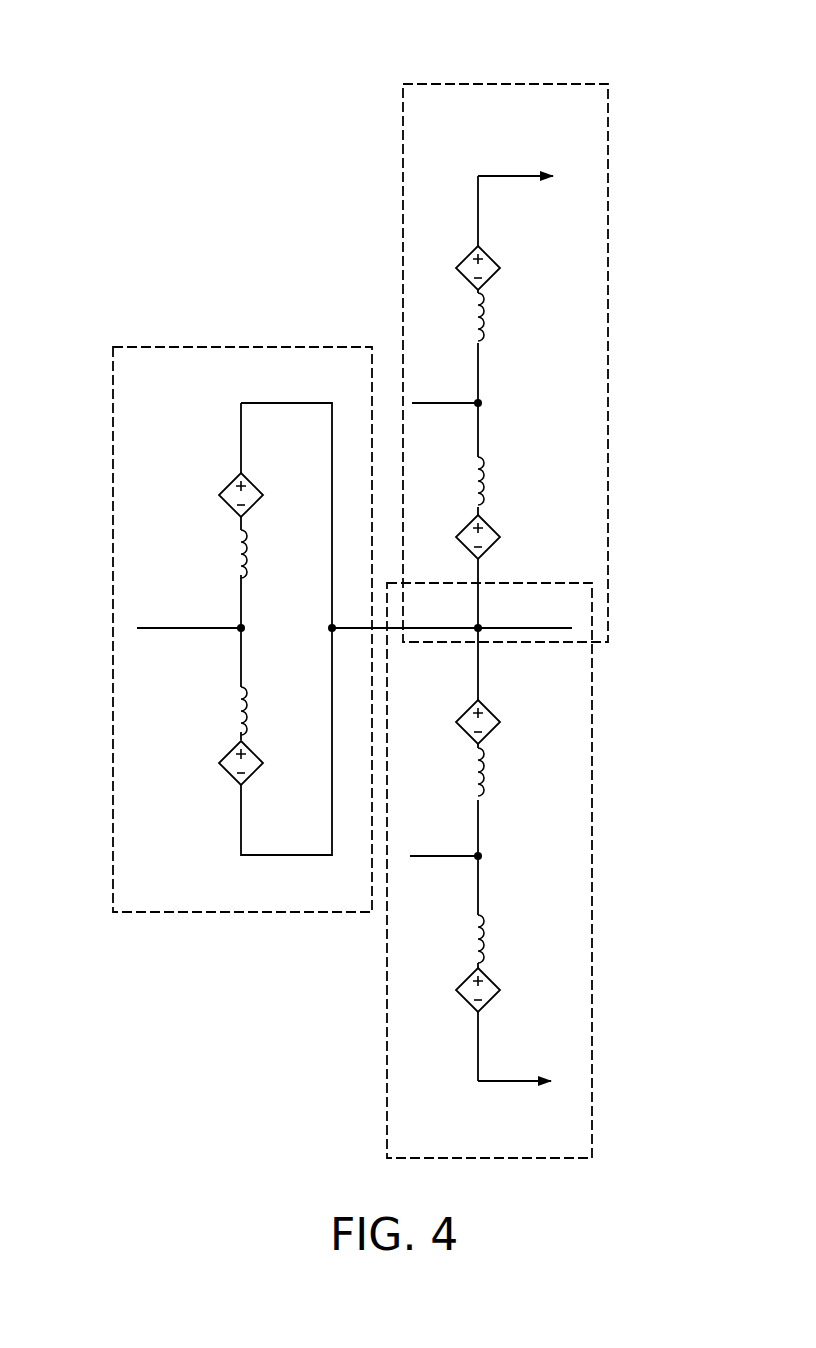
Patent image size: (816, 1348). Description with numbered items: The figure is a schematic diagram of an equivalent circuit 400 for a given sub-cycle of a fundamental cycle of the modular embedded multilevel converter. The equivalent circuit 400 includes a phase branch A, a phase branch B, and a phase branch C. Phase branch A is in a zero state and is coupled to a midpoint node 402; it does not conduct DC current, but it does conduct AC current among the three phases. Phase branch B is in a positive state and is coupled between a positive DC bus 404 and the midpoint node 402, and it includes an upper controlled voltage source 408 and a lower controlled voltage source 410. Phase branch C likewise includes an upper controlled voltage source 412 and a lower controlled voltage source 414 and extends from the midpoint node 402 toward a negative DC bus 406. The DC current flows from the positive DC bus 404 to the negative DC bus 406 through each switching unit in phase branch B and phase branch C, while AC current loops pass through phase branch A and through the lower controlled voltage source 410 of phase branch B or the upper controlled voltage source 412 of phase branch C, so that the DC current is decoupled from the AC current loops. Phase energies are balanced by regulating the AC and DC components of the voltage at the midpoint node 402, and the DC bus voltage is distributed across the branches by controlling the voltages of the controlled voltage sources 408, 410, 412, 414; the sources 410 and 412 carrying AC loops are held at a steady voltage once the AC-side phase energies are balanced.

The equivalent circuit 400 is at (257, 55).
The midpoint node 402 is at (572, 628).
The positive DC bus 404 is at (478, 176).
The negative DC bus 406 is at (478, 1081).
The upper controlled voltage source 408 is at (470, 253).
The lower controlled voltage source 410 is at (488, 521).
The upper controlled voltage source 412 is at (488, 706).
The lower controlled voltage source 414 is at (488, 974).
The phase branch A is at (113, 622).
The phase branch B is at (608, 485).
The phase branch C is at (592, 740).